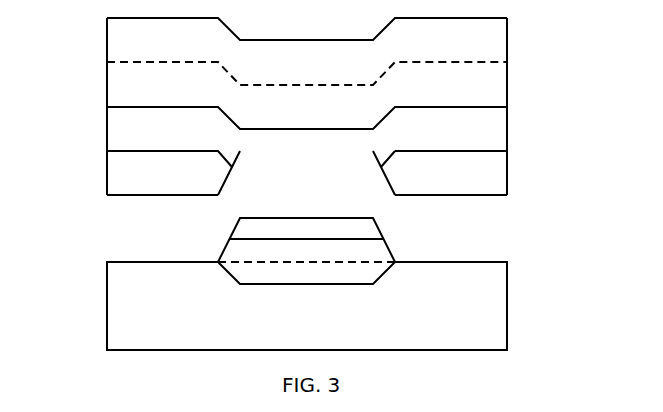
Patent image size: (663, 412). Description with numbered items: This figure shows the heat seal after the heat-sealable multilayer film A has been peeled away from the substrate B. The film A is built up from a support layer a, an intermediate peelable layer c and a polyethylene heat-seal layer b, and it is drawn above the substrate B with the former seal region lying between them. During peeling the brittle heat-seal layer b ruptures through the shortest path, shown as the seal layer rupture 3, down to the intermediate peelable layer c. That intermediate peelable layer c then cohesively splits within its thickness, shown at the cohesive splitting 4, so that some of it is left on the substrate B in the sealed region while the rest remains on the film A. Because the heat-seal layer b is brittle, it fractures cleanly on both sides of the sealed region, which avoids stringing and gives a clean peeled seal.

The heat-sealable multilayer film A is at (65, 18).
The substrate B is at (65, 262).
The support layer a is at (478, 40).
The polyethylene heat-seal layer b is at (478, 170).
The intermediate peelable layer c is at (478, 127).
The seal layer rupture 3 is at (230, 241).
The intermediate peelable layer cohesively splitting 4 is at (323, 217).